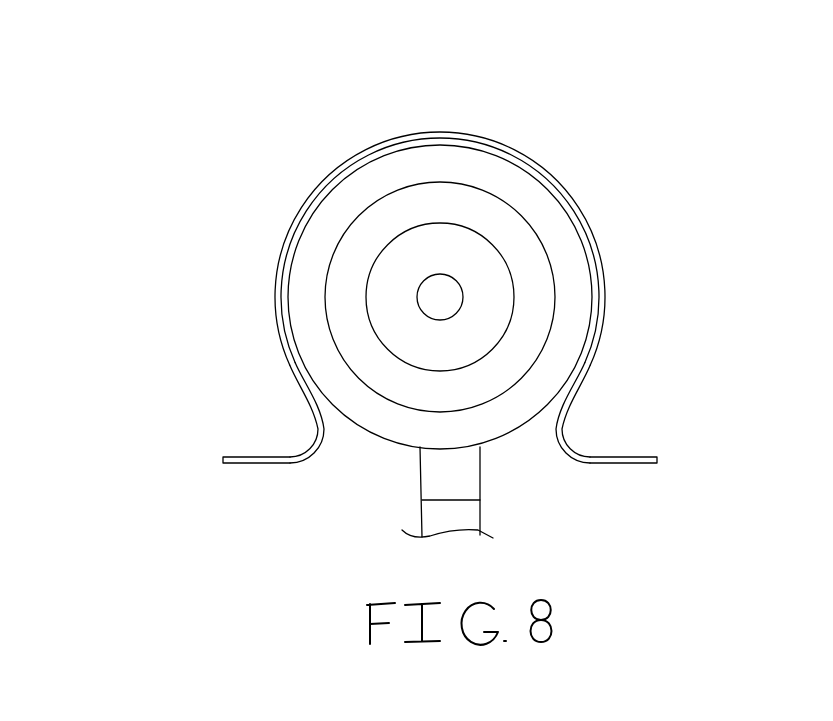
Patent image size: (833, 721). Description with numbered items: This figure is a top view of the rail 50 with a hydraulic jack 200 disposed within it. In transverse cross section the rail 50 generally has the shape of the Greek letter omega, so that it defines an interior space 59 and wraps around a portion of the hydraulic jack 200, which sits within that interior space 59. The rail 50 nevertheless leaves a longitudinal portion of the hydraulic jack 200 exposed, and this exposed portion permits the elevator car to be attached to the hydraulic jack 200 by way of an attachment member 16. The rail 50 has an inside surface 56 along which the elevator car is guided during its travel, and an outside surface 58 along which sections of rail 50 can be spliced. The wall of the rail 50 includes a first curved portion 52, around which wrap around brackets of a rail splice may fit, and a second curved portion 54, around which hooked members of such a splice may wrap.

The attachment member 16 is at (460, 482).
The rail 50 is at (287, 178).
The first curved portion 52 is at (431, 131).
The second curved portion 54 is at (312, 432).
The inside surface 56 is at (262, 464).
The outside surface 58 is at (603, 265).
The interior space 59 is at (337, 443).
The hydraulic jack 200 is at (486, 217).